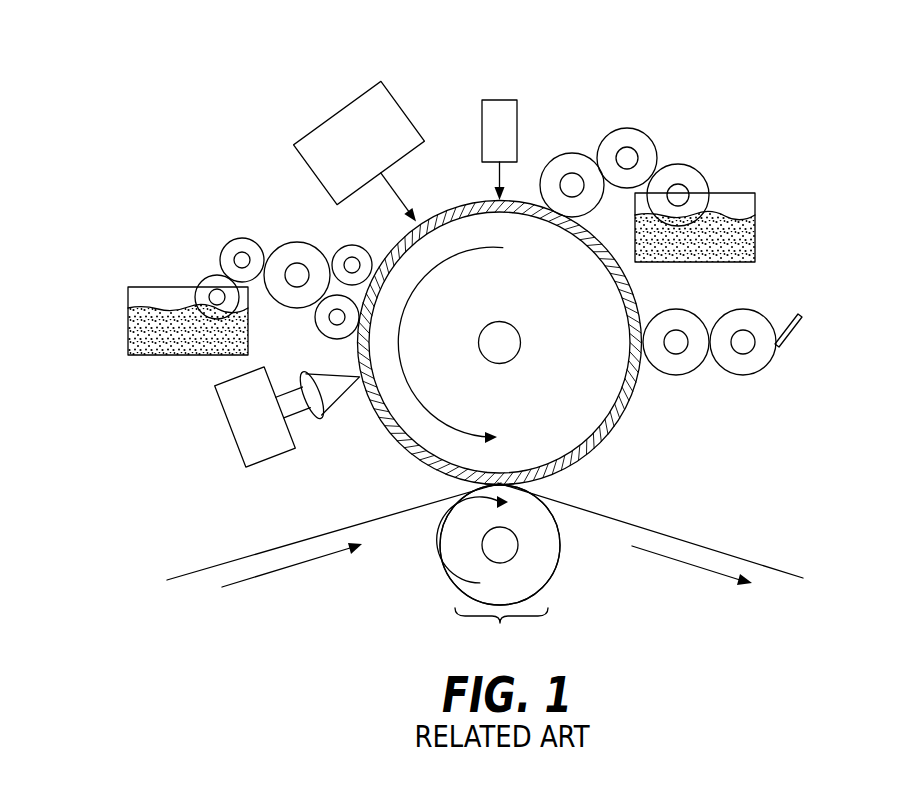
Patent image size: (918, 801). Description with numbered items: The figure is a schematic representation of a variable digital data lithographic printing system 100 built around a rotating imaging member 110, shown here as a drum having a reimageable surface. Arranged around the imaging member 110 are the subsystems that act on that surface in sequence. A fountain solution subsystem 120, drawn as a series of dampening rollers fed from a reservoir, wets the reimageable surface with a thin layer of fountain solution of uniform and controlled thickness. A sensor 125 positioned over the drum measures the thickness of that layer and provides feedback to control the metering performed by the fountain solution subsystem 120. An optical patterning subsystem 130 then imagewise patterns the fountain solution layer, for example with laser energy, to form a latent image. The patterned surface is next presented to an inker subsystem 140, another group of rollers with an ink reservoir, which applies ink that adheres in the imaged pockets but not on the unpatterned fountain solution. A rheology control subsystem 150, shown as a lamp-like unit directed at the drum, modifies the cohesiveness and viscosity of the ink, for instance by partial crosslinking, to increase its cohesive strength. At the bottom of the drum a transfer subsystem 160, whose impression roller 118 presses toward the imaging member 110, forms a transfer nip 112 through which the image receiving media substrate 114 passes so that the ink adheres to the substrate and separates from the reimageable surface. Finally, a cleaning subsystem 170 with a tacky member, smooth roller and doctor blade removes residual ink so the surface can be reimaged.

The system 100 is at (205, 141).
The imaging member 110 is at (632, 393).
The transfer nip 112 is at (500, 473).
The image receiving media substrate 114 is at (258, 552).
The impression roller 118 is at (560, 566).
The fountain solution subsystem 120 is at (661, 169).
The sensor 125 is at (503, 98).
The optical patterning subsystem 130 is at (403, 112).
The inker subsystem 140 is at (110, 227).
The rheology control subsystem 150 is at (201, 389).
The transfer subsystem 160 is at (500, 575).
The cleaning subsystem 170 is at (805, 292).